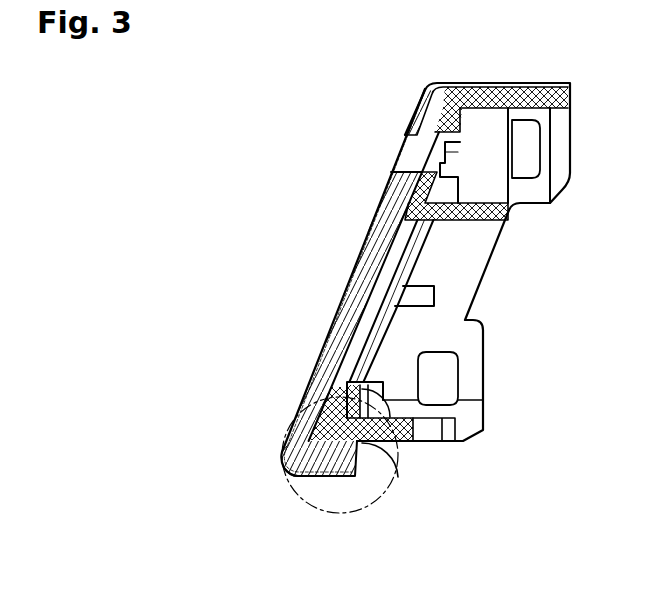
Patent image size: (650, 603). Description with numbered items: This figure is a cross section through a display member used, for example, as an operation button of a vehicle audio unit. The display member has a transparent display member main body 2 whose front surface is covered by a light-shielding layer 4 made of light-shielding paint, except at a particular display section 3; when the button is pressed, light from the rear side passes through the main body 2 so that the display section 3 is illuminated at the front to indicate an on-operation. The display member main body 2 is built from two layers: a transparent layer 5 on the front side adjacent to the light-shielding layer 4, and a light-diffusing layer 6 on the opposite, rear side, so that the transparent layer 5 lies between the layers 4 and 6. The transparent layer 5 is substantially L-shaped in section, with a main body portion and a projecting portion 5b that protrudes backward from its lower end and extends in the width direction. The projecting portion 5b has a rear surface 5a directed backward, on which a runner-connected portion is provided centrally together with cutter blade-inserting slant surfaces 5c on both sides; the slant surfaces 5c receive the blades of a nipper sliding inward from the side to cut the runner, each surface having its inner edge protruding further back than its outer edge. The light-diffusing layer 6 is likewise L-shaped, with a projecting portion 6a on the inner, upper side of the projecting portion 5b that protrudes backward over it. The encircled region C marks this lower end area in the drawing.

The display member main body 2 is at (253, 263).
The display section 3 is at (405, 149).
The light-shielding layer 4 is at (381, 232).
The transparent layer 5 is at (360, 283).
The light-diffusing layer 6 is at (363, 327).
The rear surface 5a is at (353, 458).
The projecting portion 5b is at (320, 462).
The cutter blade-inserting slant surface 5c is at (380, 460).
The projecting portion 6a is at (283, 447).
The region C is at (385, 494).